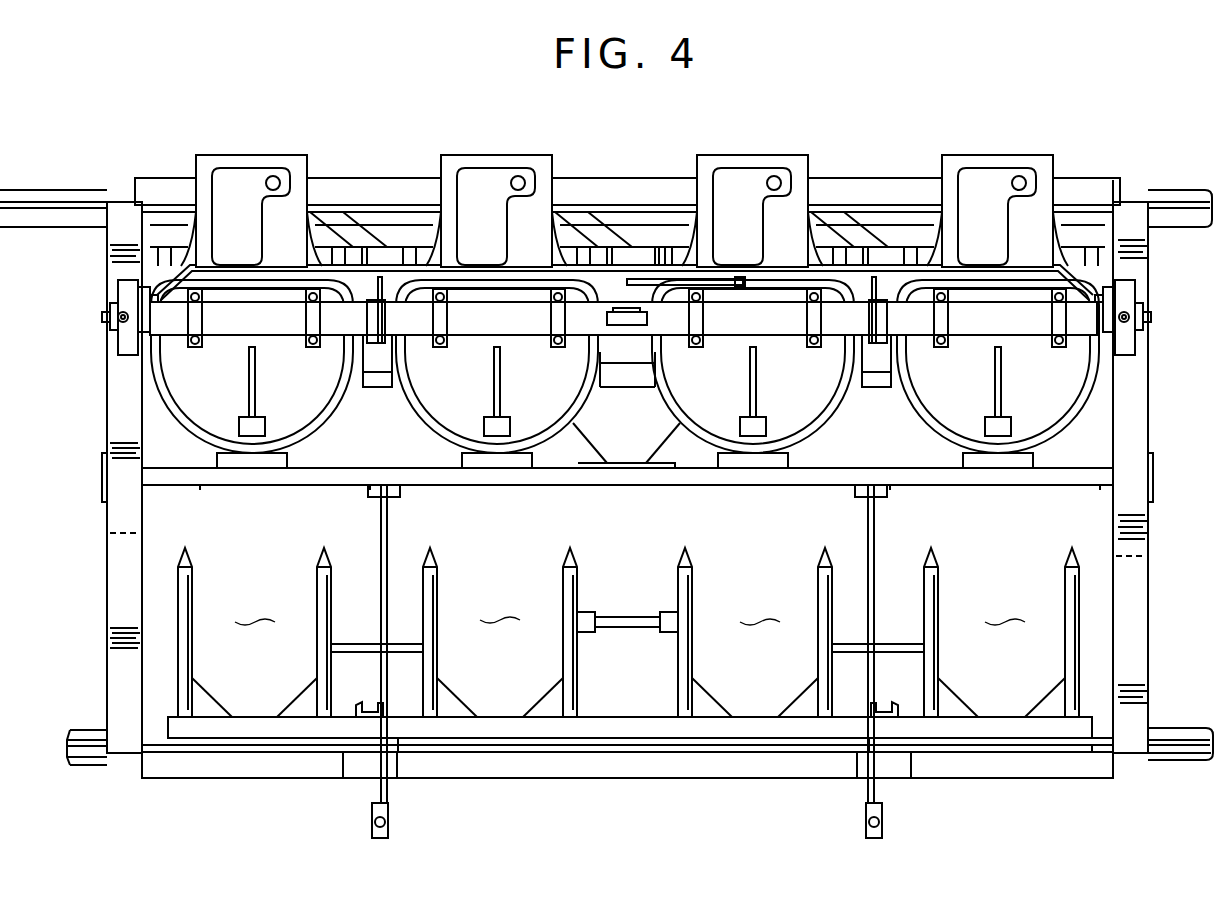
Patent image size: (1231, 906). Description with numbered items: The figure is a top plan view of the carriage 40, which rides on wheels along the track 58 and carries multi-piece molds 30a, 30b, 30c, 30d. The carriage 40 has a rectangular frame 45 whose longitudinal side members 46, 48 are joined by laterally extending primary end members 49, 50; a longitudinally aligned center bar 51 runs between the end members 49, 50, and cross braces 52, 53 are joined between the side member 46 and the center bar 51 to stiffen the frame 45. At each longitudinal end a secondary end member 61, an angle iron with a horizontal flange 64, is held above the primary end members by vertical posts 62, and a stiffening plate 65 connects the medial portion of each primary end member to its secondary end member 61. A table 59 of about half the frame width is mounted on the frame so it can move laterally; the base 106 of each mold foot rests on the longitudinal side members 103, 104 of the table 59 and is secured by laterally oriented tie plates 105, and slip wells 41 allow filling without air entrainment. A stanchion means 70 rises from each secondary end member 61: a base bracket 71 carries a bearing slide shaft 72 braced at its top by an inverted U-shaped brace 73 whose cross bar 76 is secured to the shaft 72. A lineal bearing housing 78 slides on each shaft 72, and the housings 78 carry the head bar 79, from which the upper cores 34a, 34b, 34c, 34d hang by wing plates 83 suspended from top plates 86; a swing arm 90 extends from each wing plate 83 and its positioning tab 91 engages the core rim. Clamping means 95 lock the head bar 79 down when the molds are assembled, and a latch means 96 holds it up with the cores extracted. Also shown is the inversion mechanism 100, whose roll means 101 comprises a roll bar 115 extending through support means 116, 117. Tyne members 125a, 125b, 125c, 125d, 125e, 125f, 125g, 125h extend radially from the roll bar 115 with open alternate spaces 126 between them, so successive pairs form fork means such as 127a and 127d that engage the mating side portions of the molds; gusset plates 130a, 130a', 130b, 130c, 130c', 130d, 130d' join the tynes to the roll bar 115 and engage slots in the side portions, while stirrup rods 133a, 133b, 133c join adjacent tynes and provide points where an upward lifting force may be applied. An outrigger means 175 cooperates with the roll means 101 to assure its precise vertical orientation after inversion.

The carriage 40 is at (975, 108).
The track 58 is at (72, 194).
The secondary end member 61 is at (107, 606).
The horizontal flange 64 is at (108, 632).
The stiffening plate 65 is at (102, 478).
The primary end member 49 is at (105, 533).
The primary end member 50 is at (1148, 556).
The base bracket 71 is at (116, 382).
The longitudinal side member 46 is at (383, 183).
The vertical post 62 is at (1118, 182).
The tie plate 105 is at (415, 250).
The base 106 is at (555, 232).
The longitudinal side member of table 103 is at (665, 240).
The upper core 34a is at (1012, 162).
The upper core 34b is at (742, 162).
The upper core 34c is at (500, 162).
The upper core 34d is at (240, 162).
The slip well 41 is at (472, 190).
The mold 30a is at (945, 452).
The mold 30b is at (808, 450).
The mold 30c is at (432, 450).
The mold 30d is at (302, 450).
The longitudinal side member of table 104 is at (627, 390).
The cross brace 52 is at (560, 480).
The cross brace 53 is at (690, 480).
The stanchion means 70 is at (102, 320).
The bearing slide shaft 72 is at (120, 316).
The inverted U-shaped brace 73 is at (116, 272).
The cross bar 76 is at (127, 345).
The lineal bearing housing 78 is at (112, 322).
The head bar 79 is at (512, 330).
The wing plate 83 is at (225, 350).
The top plate 86 is at (302, 350).
The swing arm 90 is at (752, 372).
The positioning tab 91 is at (490, 430).
The clamping means 95 is at (375, 322).
The table 59 is at (382, 400).
The latch means 96 is at (648, 268).
The center bar 51 is at (740, 478).
The outrigger means 175 is at (360, 836).
The tyne 125a is at (1072, 590).
The tyne 125b is at (932, 590).
The tyne 125c is at (825, 590).
The tyne 125d is at (685, 590).
The tyne 125e is at (570, 590).
The tyne 125f is at (430, 590).
The tyne 125g is at (325, 590).
The tyne 125h is at (215, 545).
The stirrup rod 133a is at (902, 648).
The stirrup rod 133b is at (612, 627).
The stirrup rod 133c is at (370, 648).
The gusset plate 130a is at (1023, 697).
The gusset plate 130a' is at (975, 685).
The gusset plate 130b is at (715, 702).
The gusset plate 130c is at (517, 697).
The gusset plate 130c' is at (477, 685).
The gusset plate 130d is at (274, 697).
The gusset plate 130d' is at (230, 685).
The alternate space 126 is at (630, 610).
The fork means 127a is at (995, 550).
The fork means 127d is at (262, 550).
The frame 45 is at (648, 782).
The roll bar 115 is at (618, 738).
The longitudinal side member 48 is at (750, 762).
The support means 116 is at (392, 740).
The support means 117 is at (848, 742).
The roll means 101 is at (1032, 770).
The inversion mechanism 100 is at (1035, 805).